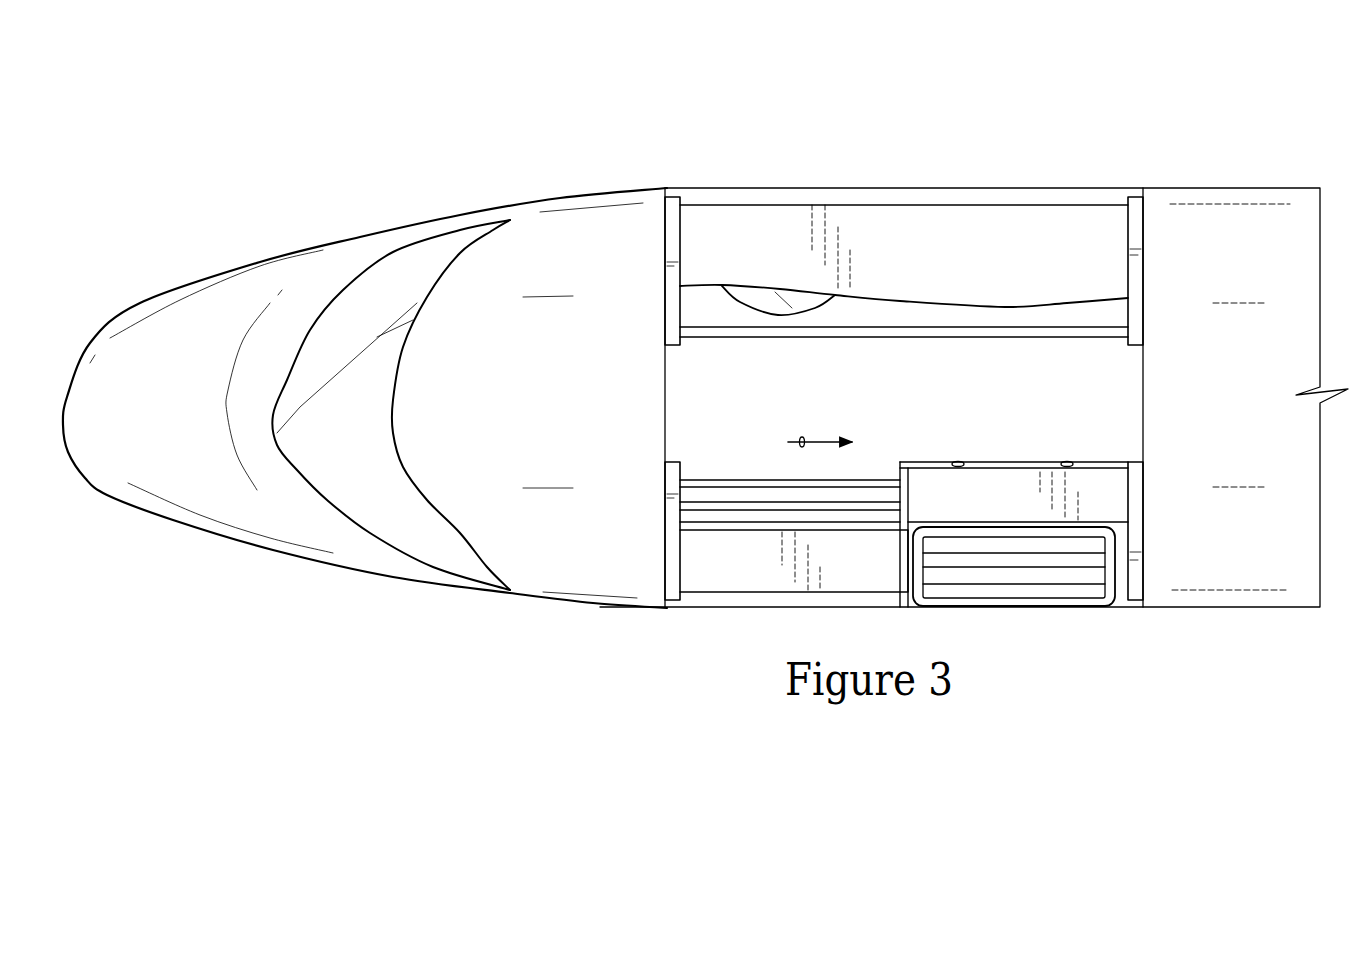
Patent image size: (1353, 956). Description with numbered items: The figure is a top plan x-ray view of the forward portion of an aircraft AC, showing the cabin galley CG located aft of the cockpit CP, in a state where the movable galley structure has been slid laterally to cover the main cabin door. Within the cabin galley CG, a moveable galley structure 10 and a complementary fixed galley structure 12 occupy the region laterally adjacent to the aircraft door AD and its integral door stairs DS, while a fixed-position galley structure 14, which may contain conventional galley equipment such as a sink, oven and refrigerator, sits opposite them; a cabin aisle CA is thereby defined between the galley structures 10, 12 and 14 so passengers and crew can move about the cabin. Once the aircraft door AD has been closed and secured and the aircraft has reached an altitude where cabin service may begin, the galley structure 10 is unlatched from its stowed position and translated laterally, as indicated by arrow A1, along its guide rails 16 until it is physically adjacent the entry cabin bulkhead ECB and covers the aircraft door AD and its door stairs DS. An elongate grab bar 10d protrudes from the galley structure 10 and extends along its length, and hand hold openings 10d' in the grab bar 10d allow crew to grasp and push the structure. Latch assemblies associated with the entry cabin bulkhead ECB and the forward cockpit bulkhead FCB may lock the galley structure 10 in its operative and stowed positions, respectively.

The aircraft AC is at (375, 148).
The cockpit CP is at (413, 537).
The cabin galley CG is at (705, 366).
The fixed-position galley structure 14 is at (904, 271).
The cabin aisle CA is at (904, 403).
The arrow A1 is at (817, 440).
The guide rails 16 is at (780, 505).
The grab bar 10d is at (1012, 440).
The hand hold openings 10d' is at (1017, 444).
The moveable galley structure 10 is at (1017, 512).
The fixed galley structure 12 is at (794, 561).
The aircraft door AD is at (1098, 608).
The entry cabin bulkhead ECB is at (1138, 473).
The forward cockpit bulkhead FCB is at (668, 542).
The door stairs DS is at (1128, 578).